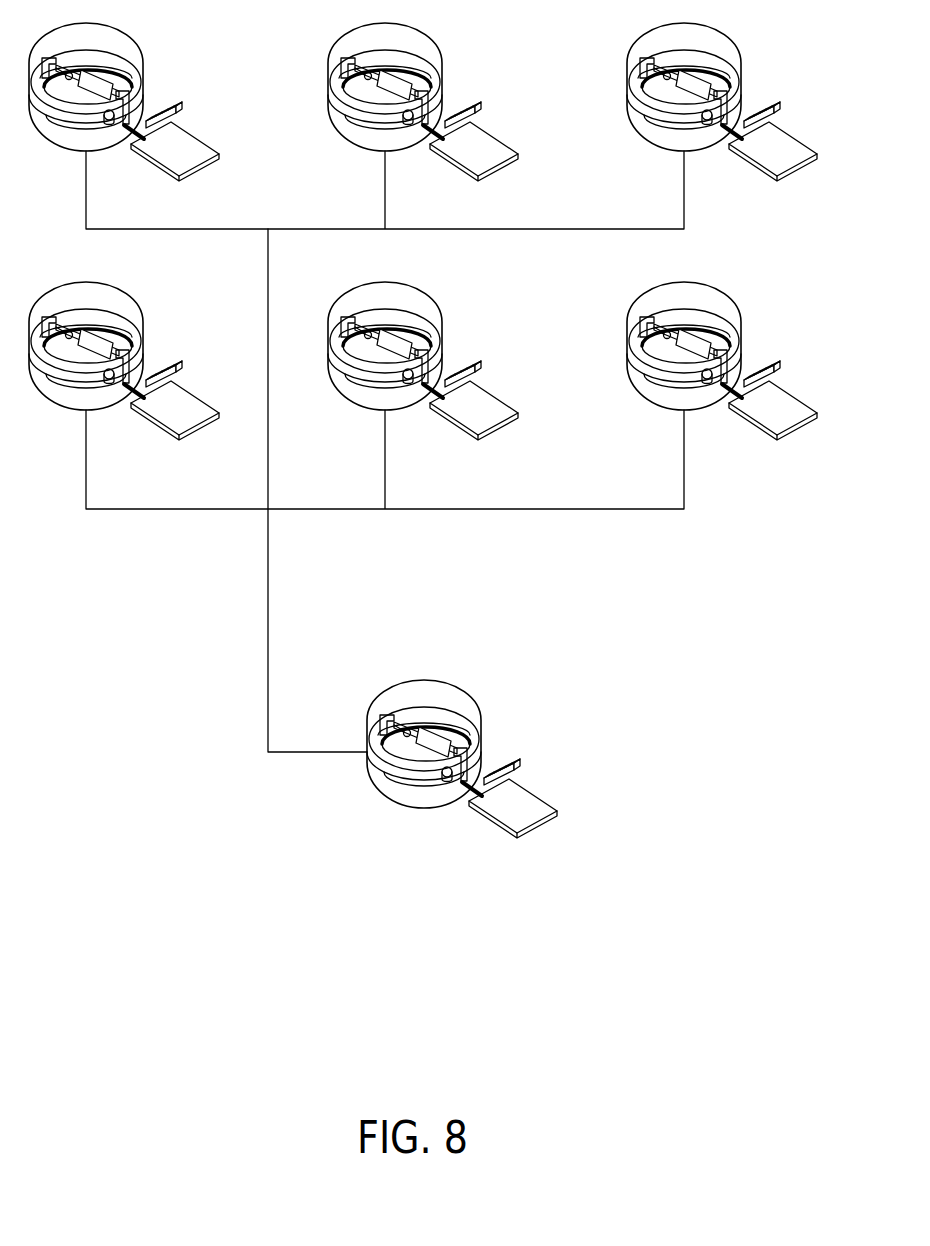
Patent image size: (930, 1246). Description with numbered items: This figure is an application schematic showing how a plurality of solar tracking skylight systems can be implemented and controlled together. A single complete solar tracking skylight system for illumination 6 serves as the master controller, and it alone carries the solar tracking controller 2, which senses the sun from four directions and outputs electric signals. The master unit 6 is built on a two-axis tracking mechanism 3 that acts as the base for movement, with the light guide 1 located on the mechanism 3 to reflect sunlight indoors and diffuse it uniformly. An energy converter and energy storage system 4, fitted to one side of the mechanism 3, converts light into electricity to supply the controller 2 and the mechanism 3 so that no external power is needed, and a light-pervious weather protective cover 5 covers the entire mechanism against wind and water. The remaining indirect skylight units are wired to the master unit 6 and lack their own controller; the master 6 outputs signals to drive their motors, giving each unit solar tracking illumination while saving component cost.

The light guide 1 is at (431, 747).
The solar tracking controller 2 is at (405, 736).
The two-axis tracking mechanism 3 is at (446, 776).
The energy converter and energy storage system 4 is at (491, 815).
The weather protective cover 5 is at (474, 701).
The solar tracking skylight system for illumination 6 is at (464, 668).